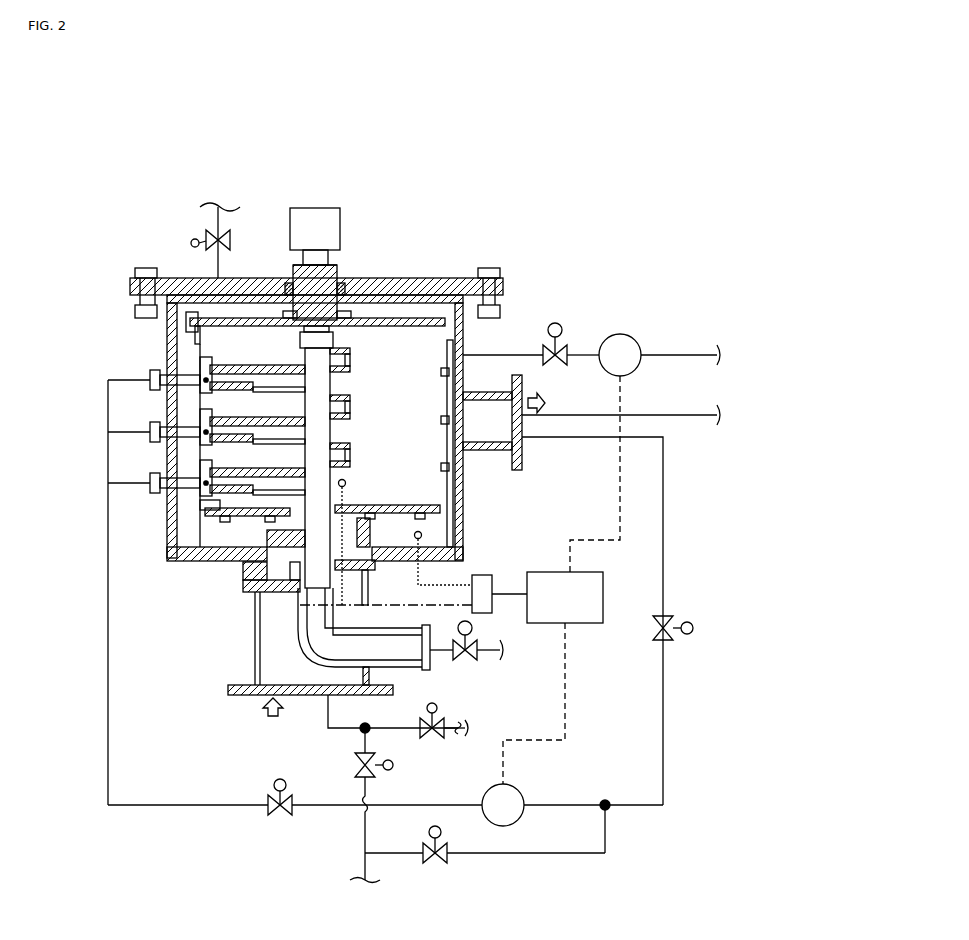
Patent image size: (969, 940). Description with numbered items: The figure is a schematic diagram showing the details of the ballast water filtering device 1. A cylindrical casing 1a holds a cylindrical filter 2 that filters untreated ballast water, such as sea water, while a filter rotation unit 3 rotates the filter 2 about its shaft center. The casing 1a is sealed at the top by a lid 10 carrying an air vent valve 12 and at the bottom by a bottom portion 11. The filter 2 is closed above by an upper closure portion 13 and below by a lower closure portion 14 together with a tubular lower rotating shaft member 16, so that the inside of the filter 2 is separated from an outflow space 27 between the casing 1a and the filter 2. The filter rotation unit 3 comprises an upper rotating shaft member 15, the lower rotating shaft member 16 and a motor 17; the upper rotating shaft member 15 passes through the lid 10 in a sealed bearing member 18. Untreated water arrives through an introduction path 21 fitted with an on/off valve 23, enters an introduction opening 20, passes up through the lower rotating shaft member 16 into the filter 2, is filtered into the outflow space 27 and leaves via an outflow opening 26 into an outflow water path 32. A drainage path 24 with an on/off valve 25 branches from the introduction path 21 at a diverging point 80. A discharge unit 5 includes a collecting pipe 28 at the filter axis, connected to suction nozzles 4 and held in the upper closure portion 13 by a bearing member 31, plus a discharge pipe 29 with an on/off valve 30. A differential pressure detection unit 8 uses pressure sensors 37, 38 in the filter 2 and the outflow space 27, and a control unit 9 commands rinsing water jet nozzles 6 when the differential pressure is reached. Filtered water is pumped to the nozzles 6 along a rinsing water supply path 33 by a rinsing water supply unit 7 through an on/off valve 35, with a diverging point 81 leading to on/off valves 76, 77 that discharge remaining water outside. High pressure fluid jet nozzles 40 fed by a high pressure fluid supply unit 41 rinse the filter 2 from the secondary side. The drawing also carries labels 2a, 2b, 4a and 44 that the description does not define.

The ballast water filtering device 1 is at (271, 395).
The casing 1a is at (168, 343).
The cylindrical filter 2 is at (168, 360).
The chamber side wall 2a is at (460, 483).
The inner wall 2b is at (200, 338).
The filter rotation unit 3 is at (283, 263).
The suction nozzles 4 is at (262, 360).
The shelf connection 4a is at (202, 383).
The discharge unit 5 is at (338, 338).
The rinsing water jet nozzles 6 is at (160, 397).
The rinsing water supply unit 7 is at (517, 786).
The differential pressure detection unit 8 is at (490, 574).
The control unit 9 is at (580, 624).
The lid 10 is at (405, 280).
The bottom portion 11 is at (183, 565).
The air vent valve 12 is at (192, 241).
The upper closure portion 13 is at (255, 320).
The lower closure portion 14 is at (223, 522).
The upper rotating shaft member 15 is at (337, 268).
The lower rotating shaft member 16 is at (243, 530).
The motor 17 is at (318, 206).
The sealed bearing member 18 is at (345, 283).
The introduction opening 20 is at (274, 673).
The introduction path 21 is at (320, 702).
The on/off valve 23 is at (440, 708).
The drainage path 24 is at (358, 750).
The on/off valve 25 is at (395, 765).
The outflow opening 26 is at (488, 378).
The outflow space 27 is at (184, 541).
The collecting pipe 28 is at (323, 461).
The discharge pipe 29 is at (358, 656).
The on/off valve 30 is at (458, 626).
The bearing member 31 is at (345, 320).
The outflow water path 32 is at (705, 418).
The rinsing water supply path 33 is at (566, 440).
The on/off valve 35 is at (272, 790).
The pressure sensor 37 is at (346, 483).
The pressure sensor 38 is at (425, 535).
The high pressure fluid jet nozzles 40 is at (438, 372).
The high pressure fluid supply unit 41 is at (630, 336).
The exhaust valve 44 is at (555, 325).
The on/off valve 76 is at (690, 621).
The on/off valve 77 is at (428, 833).
The diverging point 80 is at (372, 722).
The diverging point 81 is at (608, 811).